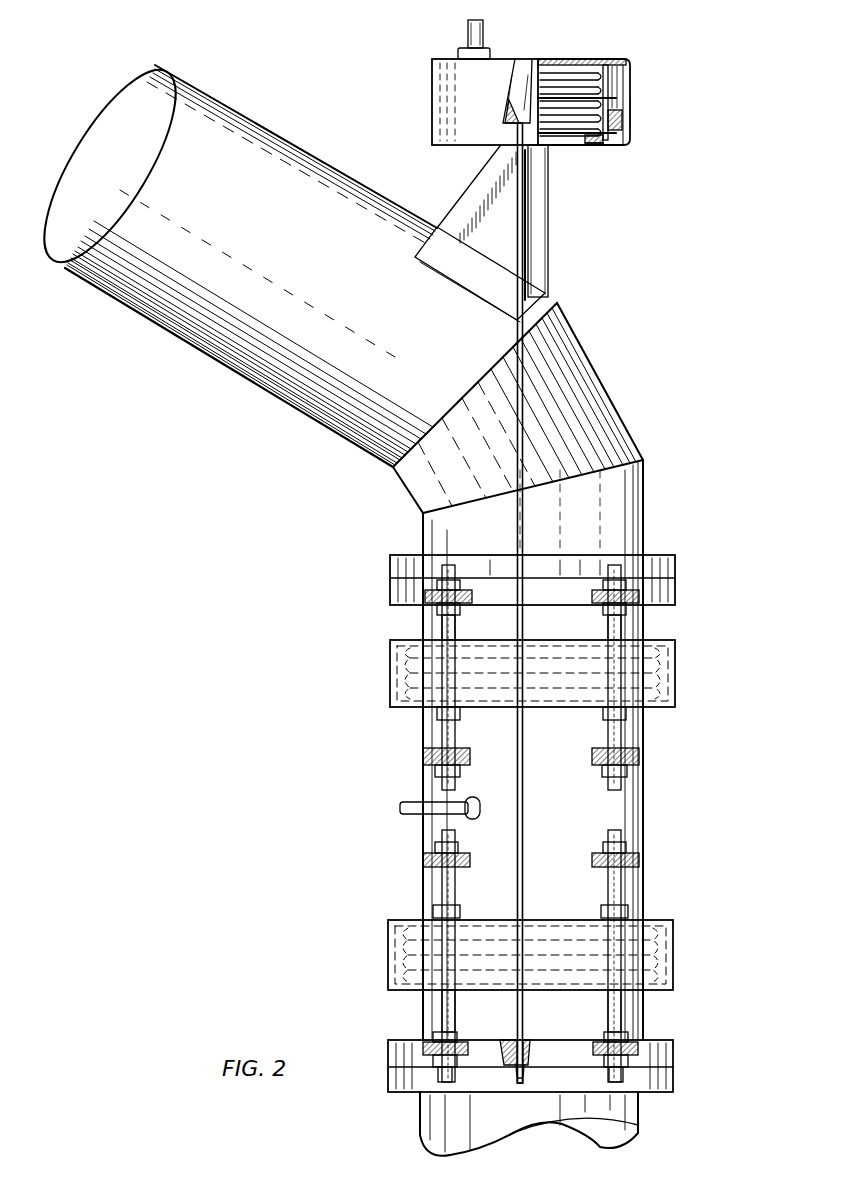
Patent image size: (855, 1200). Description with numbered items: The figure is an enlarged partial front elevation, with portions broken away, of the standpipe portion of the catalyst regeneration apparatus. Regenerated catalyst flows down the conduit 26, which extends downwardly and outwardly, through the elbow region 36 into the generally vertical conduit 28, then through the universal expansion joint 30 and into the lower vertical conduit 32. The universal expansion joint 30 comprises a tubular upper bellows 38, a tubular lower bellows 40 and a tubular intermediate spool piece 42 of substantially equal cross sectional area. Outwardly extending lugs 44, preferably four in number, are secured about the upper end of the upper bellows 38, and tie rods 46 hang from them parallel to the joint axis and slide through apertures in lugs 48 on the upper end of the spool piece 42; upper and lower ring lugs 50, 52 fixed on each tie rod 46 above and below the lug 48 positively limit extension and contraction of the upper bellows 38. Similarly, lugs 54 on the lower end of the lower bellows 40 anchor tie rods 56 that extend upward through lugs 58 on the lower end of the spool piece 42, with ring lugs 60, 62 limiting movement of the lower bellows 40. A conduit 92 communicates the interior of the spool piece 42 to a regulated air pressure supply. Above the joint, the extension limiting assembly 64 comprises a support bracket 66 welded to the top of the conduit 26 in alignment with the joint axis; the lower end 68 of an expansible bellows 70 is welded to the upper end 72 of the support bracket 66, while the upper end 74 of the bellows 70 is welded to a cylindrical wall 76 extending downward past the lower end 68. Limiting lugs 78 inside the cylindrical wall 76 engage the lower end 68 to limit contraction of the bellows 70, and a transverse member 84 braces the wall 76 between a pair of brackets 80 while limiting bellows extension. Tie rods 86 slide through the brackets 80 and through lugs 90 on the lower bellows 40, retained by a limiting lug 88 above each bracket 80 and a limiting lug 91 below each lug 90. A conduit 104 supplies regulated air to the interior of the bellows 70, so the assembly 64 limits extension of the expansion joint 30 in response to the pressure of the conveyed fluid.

The conduit 26 is at (340, 417).
The conduit 28 is at (645, 505).
The universal expansion joint 30 is at (658, 829).
The conduit 32 is at (420, 1118).
The elbow 36 is at (597, 382).
The upper bellows 38 is at (676, 668).
The lower bellows 40 is at (674, 958).
The intermediate spool piece 42 is at (623, 810).
The lugs 44 is at (430, 596).
The tie rods 46 is at (445, 622).
The lug 48 is at (430, 757).
The upper ring lug 50 is at (440, 712).
The lower ring lug 52 is at (437, 770).
The lugs 54 is at (428, 1047).
The tie rods 56 is at (445, 1012).
The lug 58 is at (430, 860).
The upper ring lug 60 is at (437, 848).
The lower ring lug 62 is at (437, 912).
The extension limiting assembly 64 is at (653, 118).
The support bracket 66 is at (533, 192).
The lower end of bellows 68 is at (600, 143).
The expansible bellows 70 is at (618, 107).
The upper end of support bracket 72 is at (550, 135).
The upper end of bellows 74 is at (570, 60).
The cylindrical wall 76 is at (630, 83).
The limiting lugs 78 is at (622, 114).
The brackets 80 is at (500, 130).
The transverse member 84 is at (603, 147).
The tie rods 86 is at (528, 238).
The limiting lug 88 is at (508, 110).
The lug 90 is at (505, 1060).
The limiting lug 91 is at (527, 1085).
The conduit 92 is at (405, 808).
The conduit 104 is at (483, 32).